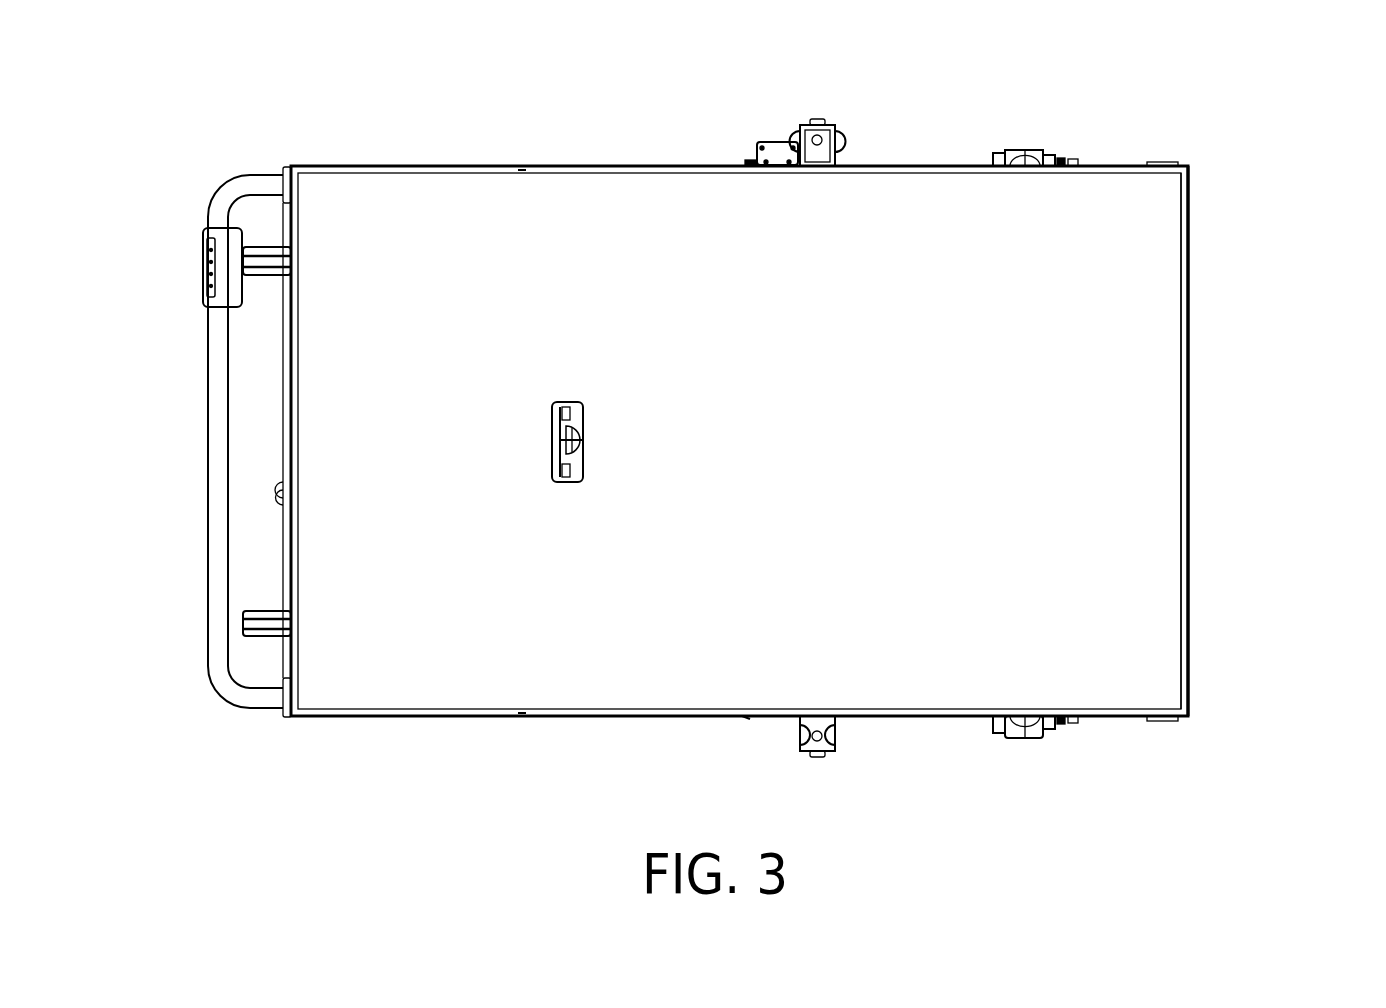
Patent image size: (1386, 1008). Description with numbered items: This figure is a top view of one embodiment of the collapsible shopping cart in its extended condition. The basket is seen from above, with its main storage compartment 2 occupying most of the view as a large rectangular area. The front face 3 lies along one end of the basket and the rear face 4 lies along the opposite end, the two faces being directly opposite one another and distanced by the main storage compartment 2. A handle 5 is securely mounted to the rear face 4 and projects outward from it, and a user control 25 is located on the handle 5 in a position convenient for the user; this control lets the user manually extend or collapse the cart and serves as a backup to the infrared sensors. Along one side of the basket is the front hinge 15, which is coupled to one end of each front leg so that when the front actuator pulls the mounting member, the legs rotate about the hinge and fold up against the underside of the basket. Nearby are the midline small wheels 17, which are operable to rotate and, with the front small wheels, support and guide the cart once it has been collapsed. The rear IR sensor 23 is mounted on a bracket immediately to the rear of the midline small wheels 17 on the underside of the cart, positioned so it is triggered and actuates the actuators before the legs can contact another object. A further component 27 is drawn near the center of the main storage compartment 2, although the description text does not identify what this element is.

The main storage compartment 2 is at (1132, 496).
The front face 3 is at (1196, 306).
The rear face 4 is at (272, 406).
The handle 5 is at (214, 175).
The front hinge 15 is at (1033, 141).
The midline small wheels 17 is at (856, 122).
The rear IR sensor 23 is at (774, 132).
The user control 25 is at (191, 231).
The latch 27 is at (564, 389).